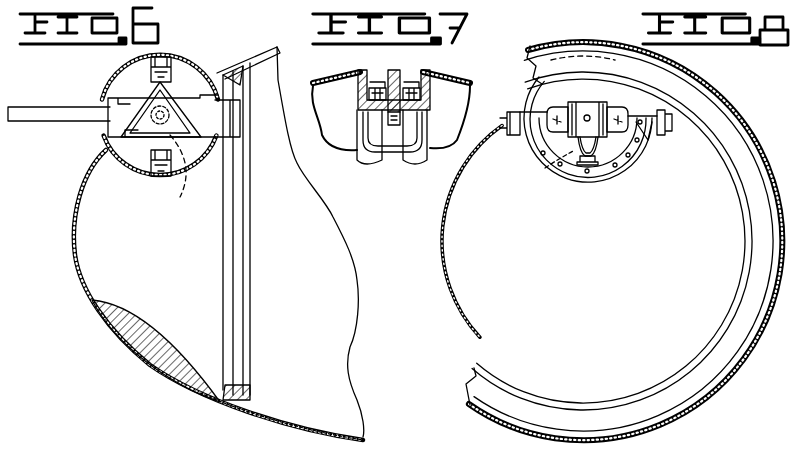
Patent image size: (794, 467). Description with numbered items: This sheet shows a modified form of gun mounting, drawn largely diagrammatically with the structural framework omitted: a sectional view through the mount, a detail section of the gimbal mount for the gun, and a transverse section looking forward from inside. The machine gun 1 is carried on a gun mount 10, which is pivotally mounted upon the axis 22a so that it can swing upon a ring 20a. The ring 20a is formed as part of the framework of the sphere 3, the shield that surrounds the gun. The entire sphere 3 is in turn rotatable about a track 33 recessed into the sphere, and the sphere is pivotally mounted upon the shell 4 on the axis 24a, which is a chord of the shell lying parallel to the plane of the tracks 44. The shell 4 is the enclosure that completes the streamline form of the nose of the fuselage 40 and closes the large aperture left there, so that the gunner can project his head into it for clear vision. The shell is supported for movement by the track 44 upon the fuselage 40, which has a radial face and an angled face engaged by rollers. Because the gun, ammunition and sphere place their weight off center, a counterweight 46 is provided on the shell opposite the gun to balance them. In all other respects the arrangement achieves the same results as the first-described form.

In FIG. 6, the machine gun 1 is at (46, 107).
In FIG. 6, the sphere 3 is at (107, 82).
In FIG. 7, the sphere 3 is at (470, 76).
In FIG. 6, the shell 4 is at (76, 205).
In FIG. 8, the shell 4 is at (456, 300).
In FIG. 6, the gun mount 10 is at (186, 143).
In FIG. 8, the gun mount 10 is at (598, 165).
In FIG. 6, the ring 20a is at (155, 170).
In FIG. 7, the ring 20a is at (420, 147).
In FIG. 8, the ring 20a is at (620, 156).
In FIG. 8, the axis 22a is at (552, 172).
In FIG. 6, the axis 24a is at (186, 186).
In FIG. 8, the axis 24a is at (668, 128).
In FIG. 6, the track 33 is at (165, 56).
In FIG. 7, the track 33 is at (395, 70).
In FIG. 6, the fuselage 40 is at (292, 420).
In FIG. 8, the fuselage 40 is at (695, 400).
In FIG. 6, the track 44 is at (241, 280).
In FIG. 8, the track 44 is at (648, 392).
In FIG. 6, the counterweight 46 is at (100, 325).